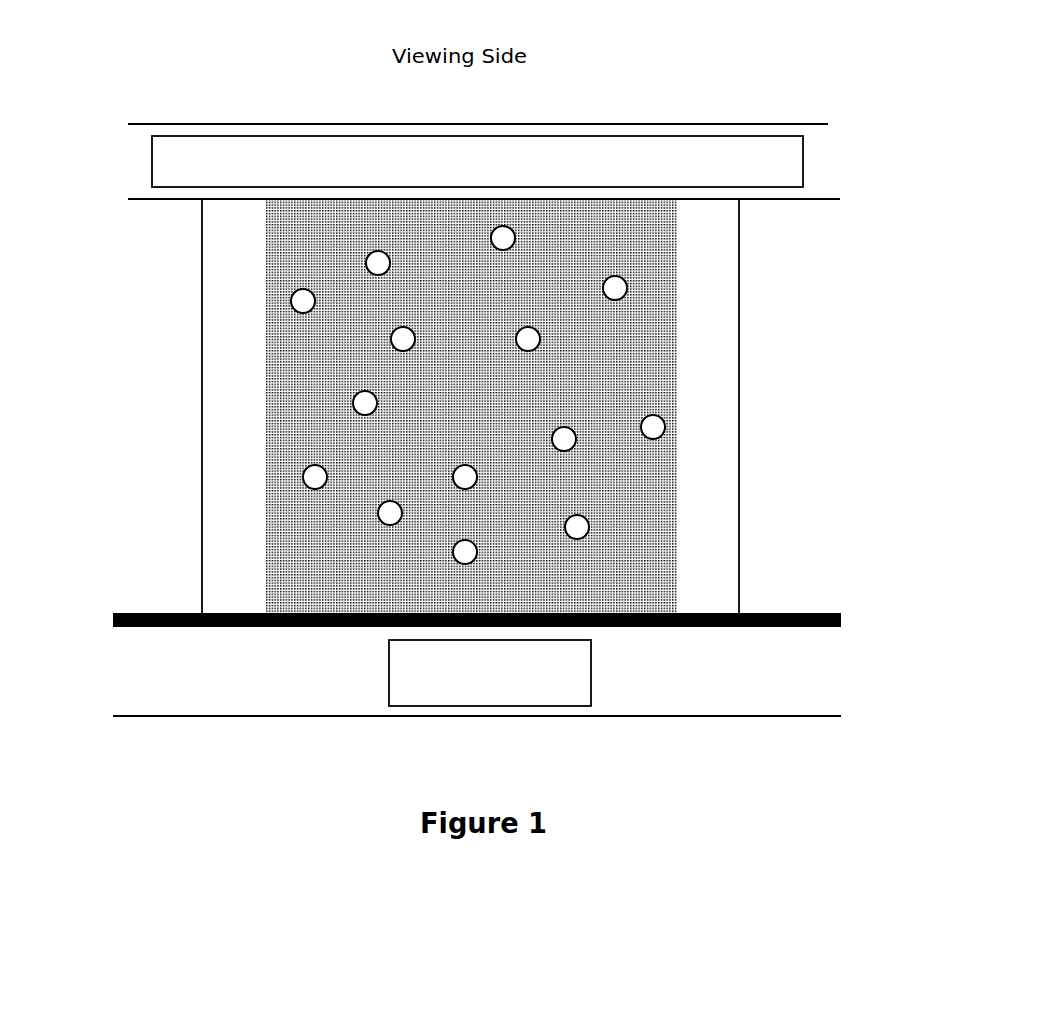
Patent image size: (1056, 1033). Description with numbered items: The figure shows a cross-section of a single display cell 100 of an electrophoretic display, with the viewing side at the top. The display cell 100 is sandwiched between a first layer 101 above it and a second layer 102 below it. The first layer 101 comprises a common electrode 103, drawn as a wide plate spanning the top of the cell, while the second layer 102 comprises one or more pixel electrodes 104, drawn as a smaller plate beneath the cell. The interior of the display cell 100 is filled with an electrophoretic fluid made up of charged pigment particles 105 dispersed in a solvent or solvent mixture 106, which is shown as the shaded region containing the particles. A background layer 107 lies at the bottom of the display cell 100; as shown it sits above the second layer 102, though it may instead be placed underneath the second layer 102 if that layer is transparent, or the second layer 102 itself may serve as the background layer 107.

The display cell 100 is at (434, 406).
The first layer 101 is at (441, 161).
The second layer 102 is at (443, 678).
The common electrode 103 is at (477, 161).
The pixel electrode 104 is at (490, 673).
The charged pigment particles 105 is at (666, 428).
The solvent or solvent mixture 106 is at (643, 539).
The background layer 107 is at (853, 616).